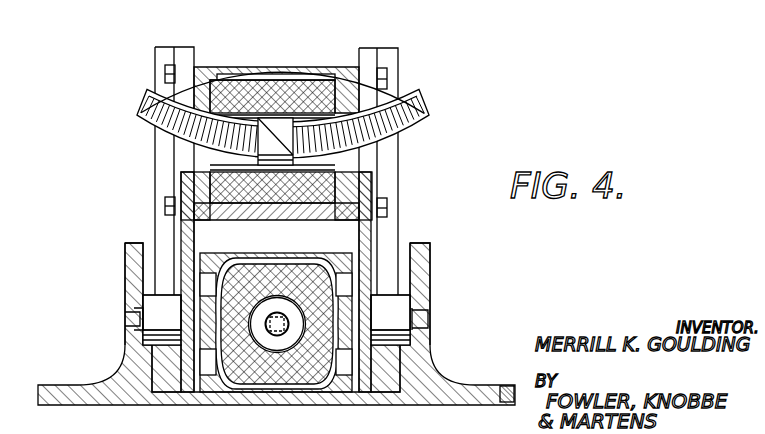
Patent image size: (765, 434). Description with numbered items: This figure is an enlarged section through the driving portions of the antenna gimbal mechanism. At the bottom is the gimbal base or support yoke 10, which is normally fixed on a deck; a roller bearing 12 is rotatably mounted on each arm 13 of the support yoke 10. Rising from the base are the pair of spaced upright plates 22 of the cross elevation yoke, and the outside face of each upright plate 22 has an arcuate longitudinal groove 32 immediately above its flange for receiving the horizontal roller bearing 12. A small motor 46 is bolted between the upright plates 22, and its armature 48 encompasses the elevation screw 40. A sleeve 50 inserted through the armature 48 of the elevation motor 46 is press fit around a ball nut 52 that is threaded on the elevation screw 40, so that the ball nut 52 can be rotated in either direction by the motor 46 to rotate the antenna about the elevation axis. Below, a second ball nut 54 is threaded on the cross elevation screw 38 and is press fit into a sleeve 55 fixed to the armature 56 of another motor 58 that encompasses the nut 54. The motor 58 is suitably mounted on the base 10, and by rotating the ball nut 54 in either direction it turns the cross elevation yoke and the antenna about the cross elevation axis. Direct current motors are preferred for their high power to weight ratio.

The support yoke 10 is at (53, 388).
The roller bearing 12 is at (143, 338).
The arm 13 is at (128, 258).
The upright plate 22 is at (190, 236).
The arcuate longitudinal groove 32 is at (379, 266).
The cross elevation screw 38 is at (276, 332).
The elevation screw 40 is at (426, 110).
The motor 46 is at (298, 67).
The armature 48 is at (230, 88).
The sleeve 50 is at (315, 110).
The ball nut 52 is at (256, 163).
The ball nut 54 is at (286, 306).
The sleeve 55 is at (263, 350).
The armature 56 is at (268, 278).
The motor 58 is at (248, 261).